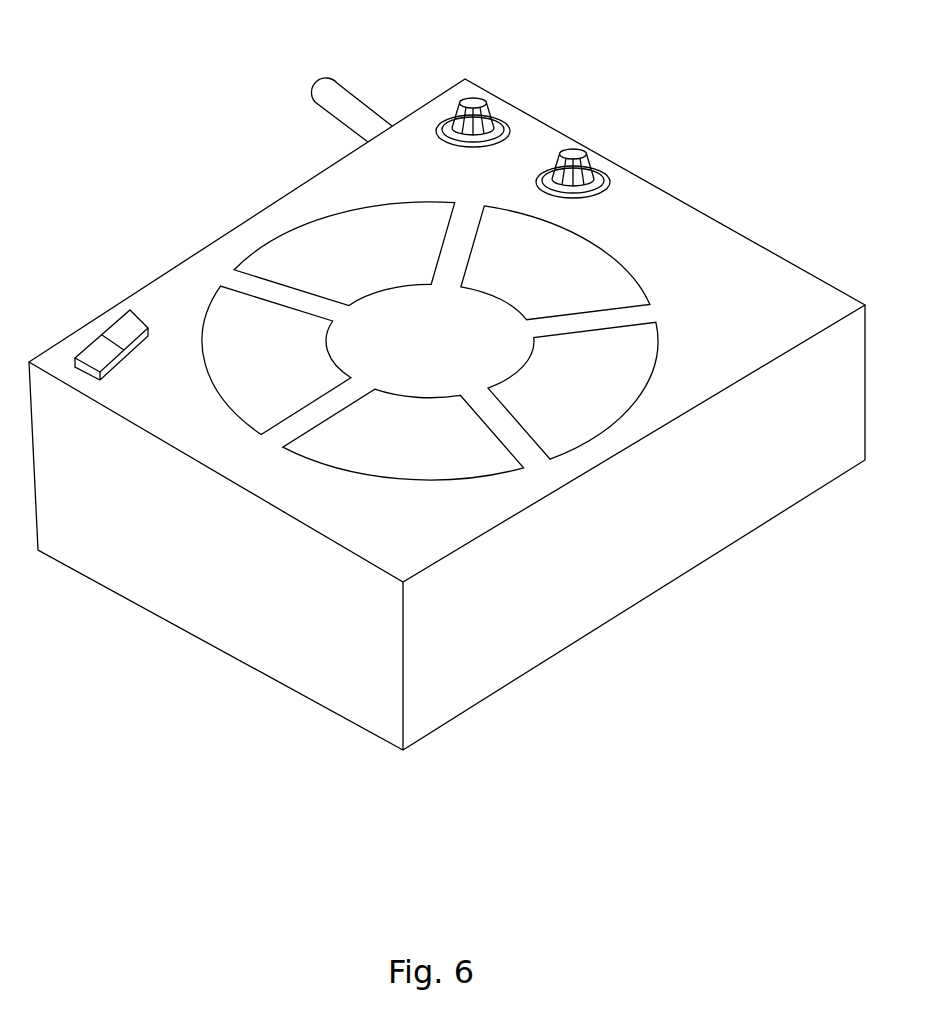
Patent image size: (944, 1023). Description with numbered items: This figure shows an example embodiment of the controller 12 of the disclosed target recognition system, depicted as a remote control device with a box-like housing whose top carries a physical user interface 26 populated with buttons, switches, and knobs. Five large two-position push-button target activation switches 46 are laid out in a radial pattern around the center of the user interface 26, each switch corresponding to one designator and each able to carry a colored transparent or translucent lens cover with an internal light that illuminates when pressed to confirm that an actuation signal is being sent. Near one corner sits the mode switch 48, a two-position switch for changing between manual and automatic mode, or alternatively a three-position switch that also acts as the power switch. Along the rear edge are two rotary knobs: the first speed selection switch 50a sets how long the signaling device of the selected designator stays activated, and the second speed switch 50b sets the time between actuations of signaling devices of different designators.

The controller 12 is at (447, 385).
The user interface 26 is at (665, 251).
The target activation switches 46 is at (354, 264).
The mode switch 48 is at (98, 350).
The first speed selection switch 50a is at (474, 100).
The second speed switch 50b is at (563, 150).